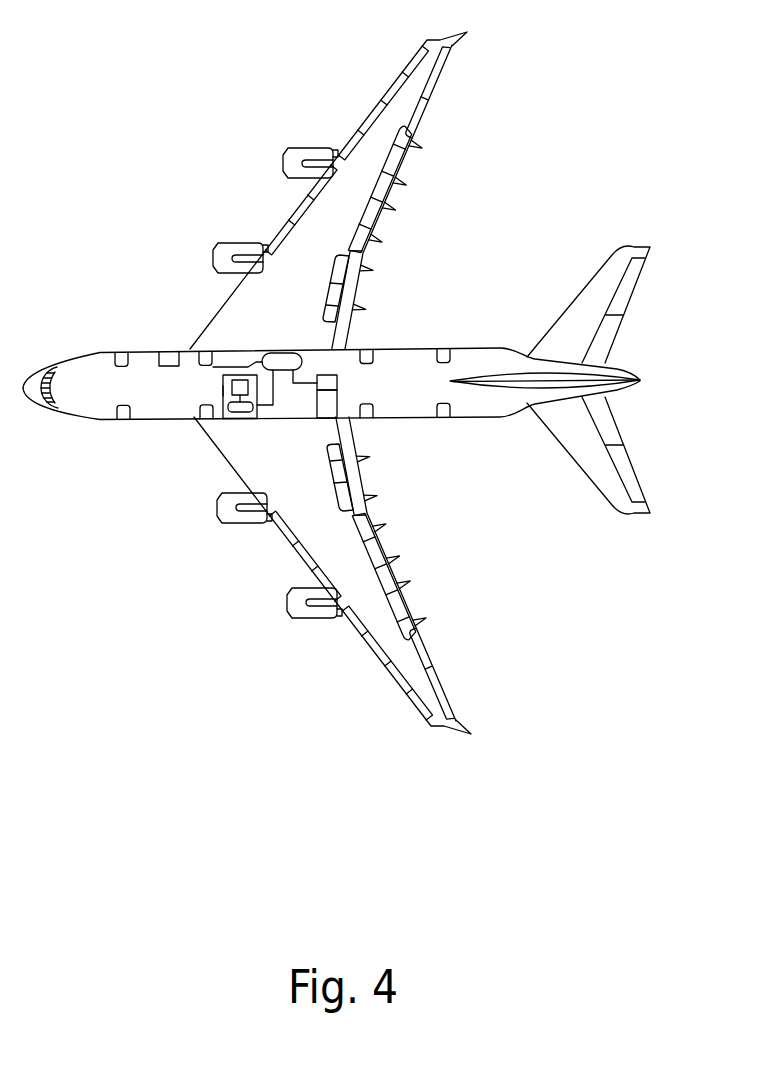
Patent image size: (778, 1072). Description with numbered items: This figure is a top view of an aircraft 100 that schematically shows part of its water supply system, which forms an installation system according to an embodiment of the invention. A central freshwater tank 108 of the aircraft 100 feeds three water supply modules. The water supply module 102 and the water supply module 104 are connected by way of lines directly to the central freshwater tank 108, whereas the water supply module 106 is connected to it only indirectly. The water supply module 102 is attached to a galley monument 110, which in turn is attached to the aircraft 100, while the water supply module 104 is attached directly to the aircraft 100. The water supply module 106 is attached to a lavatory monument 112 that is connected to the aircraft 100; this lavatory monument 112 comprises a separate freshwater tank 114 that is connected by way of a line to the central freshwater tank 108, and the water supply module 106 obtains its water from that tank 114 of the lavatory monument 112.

The aircraft 100 is at (118, 106).
The water supply module 102 is at (338, 378).
The water supply module 104 is at (223, 383).
The water supply module 106 is at (225, 377).
The central freshwater tank 108 is at (285, 367).
The galley monument 110 is at (327, 403).
The lavatory monument 112 is at (223, 390).
The separate freshwater tank 114 is at (232, 407).